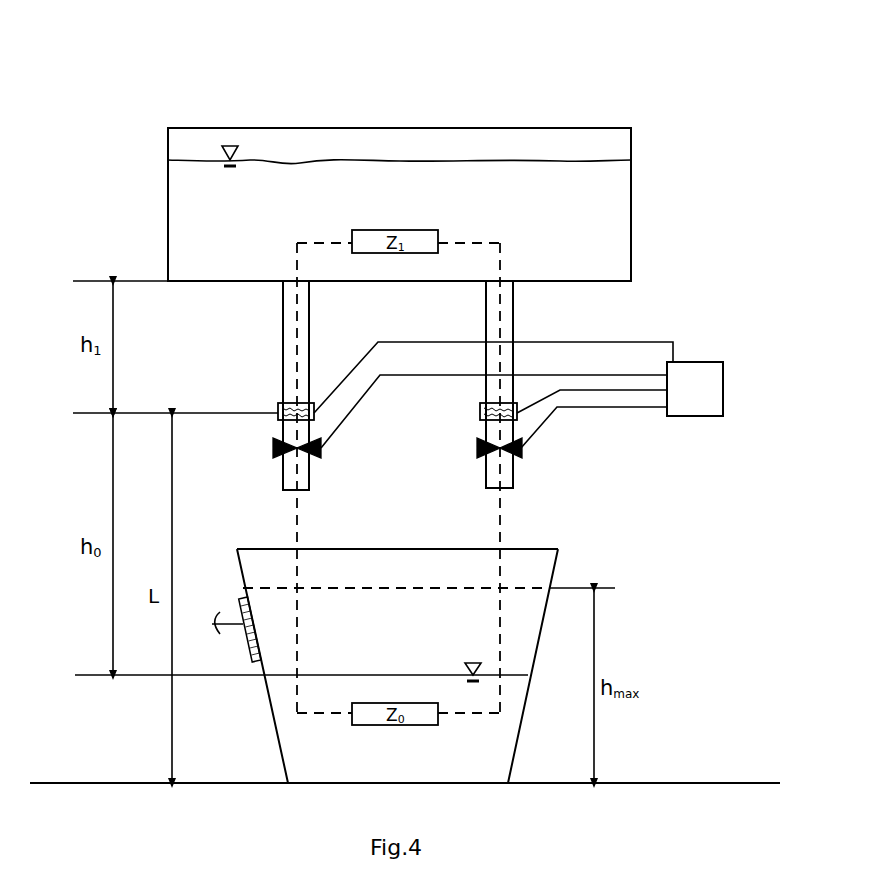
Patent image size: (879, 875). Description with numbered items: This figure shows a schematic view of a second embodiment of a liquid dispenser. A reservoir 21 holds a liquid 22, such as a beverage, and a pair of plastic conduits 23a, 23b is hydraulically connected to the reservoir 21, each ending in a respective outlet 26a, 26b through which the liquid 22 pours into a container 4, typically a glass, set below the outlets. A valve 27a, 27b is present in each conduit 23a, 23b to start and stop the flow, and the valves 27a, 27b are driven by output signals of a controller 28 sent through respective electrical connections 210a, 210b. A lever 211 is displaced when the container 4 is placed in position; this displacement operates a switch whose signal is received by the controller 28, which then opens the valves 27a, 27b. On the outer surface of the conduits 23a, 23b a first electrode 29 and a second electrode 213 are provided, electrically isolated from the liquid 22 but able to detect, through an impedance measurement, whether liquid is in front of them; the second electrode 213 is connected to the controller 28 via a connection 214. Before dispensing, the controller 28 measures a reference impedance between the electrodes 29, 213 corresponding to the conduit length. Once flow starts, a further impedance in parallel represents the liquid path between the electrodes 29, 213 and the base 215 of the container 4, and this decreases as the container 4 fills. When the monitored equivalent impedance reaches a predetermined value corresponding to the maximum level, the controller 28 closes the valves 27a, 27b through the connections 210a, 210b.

The reservoir 21 is at (490, 128).
The liquid 22 is at (621, 212).
The conduit 23a is at (283, 310).
The conduit 23b is at (513, 308).
The first electrode 29 is at (278, 408).
The second electrode 213 is at (480, 413).
The valve 27a is at (273, 448).
The valve 27b is at (477, 448).
The outlet 26a is at (297, 492).
The outlet 26b is at (500, 490).
The electrical connection 210a is at (542, 373).
The electrical connection 210b is at (653, 408).
The electrical connection 214 is at (607, 390).
The controller 28 is at (712, 368).
The container 4 is at (237, 565).
The lever 211 is at (247, 655).
The base 215 is at (347, 772).